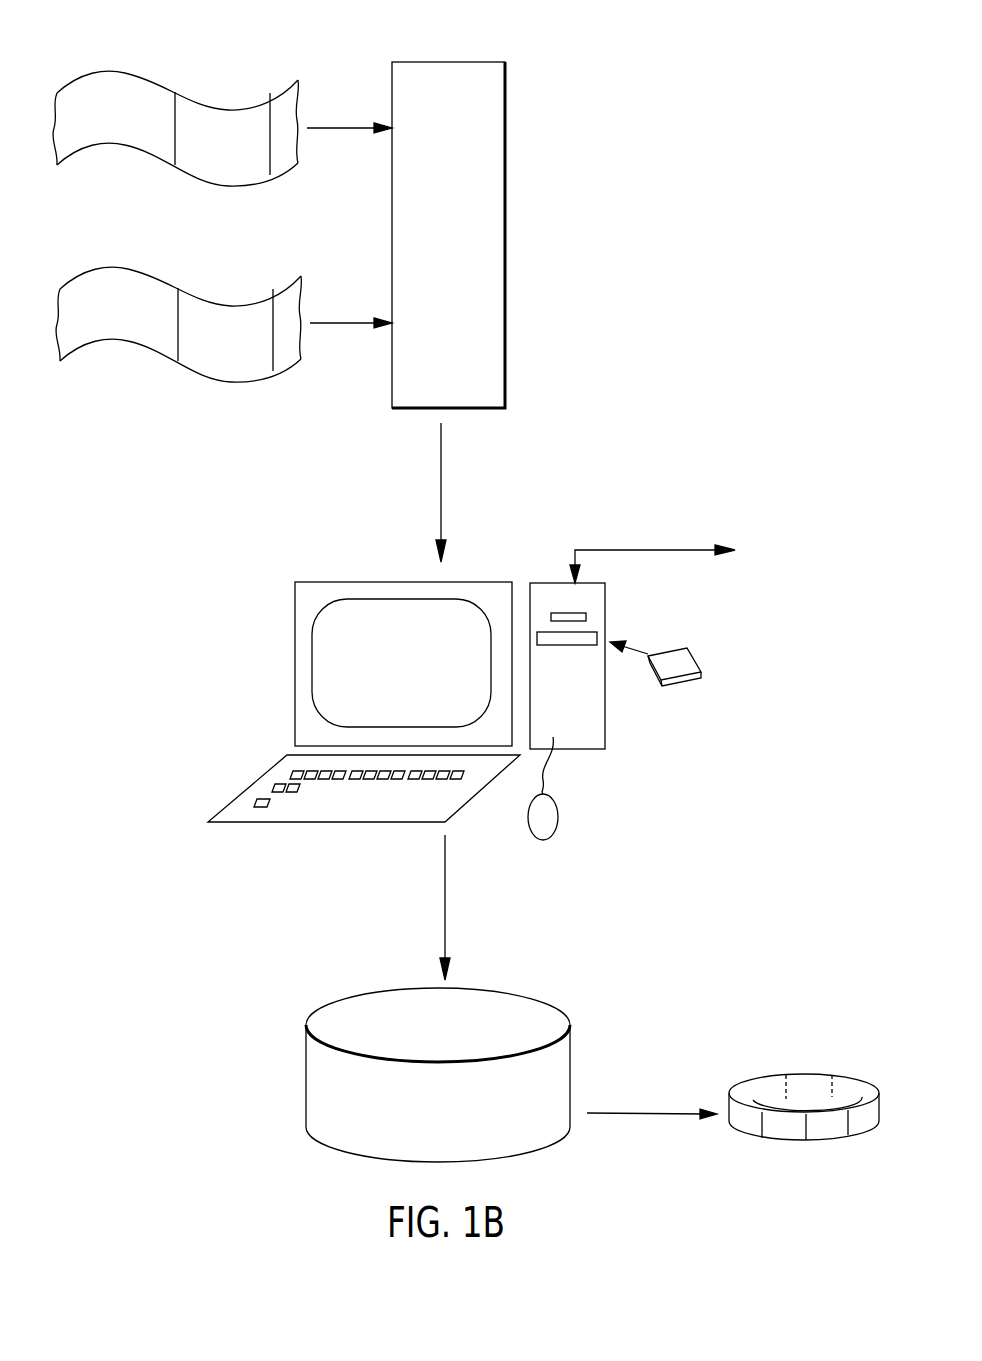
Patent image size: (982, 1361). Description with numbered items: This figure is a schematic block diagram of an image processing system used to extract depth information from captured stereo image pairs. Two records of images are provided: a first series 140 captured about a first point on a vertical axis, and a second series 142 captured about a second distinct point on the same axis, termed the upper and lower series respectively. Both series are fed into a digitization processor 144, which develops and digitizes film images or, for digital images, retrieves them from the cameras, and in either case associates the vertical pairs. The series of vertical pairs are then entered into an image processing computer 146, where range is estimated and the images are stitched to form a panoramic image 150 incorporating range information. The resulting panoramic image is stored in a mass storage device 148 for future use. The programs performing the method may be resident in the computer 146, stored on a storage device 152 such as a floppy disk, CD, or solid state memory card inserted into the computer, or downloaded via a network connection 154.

The first series of images 140 is at (105, 72).
The second series of images 142 is at (210, 380).
The digitization processor 144 is at (507, 150).
The image processing computer 146 is at (481, 581).
The mass storage device 148 is at (571, 1073).
The panoramic image 150 is at (815, 1073).
The storage device 152 is at (700, 655).
The network connection 154 is at (648, 549).